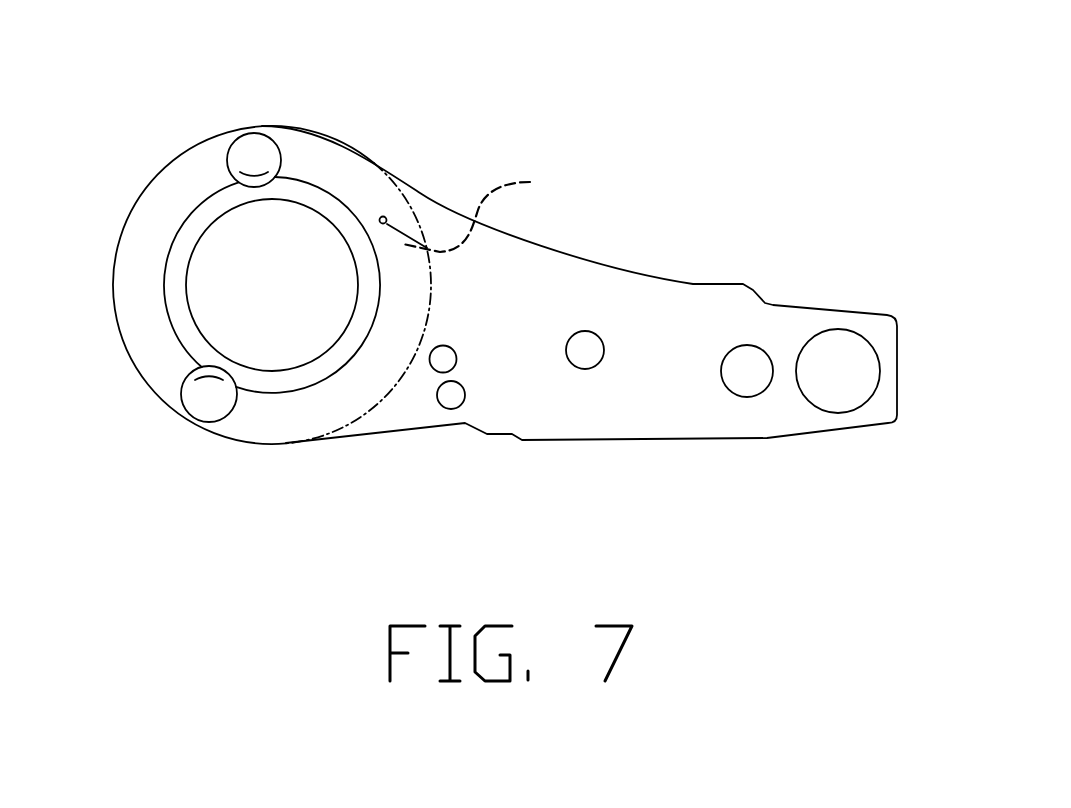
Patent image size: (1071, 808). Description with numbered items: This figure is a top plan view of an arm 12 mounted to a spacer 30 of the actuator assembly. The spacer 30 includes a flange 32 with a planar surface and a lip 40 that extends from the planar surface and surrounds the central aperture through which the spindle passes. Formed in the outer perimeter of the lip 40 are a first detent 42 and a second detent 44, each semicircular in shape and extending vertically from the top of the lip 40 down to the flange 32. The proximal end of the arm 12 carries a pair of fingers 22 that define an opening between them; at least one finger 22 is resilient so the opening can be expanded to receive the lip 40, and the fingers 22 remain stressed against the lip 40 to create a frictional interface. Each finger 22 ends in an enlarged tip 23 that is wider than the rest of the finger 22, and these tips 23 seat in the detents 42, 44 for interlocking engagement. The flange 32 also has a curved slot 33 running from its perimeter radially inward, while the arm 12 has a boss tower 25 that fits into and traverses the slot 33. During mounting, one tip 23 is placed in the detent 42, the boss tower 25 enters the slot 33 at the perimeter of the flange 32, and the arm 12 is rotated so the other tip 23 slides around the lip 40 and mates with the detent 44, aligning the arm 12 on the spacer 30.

The arm 12 is at (577, 267).
The fingers 22 is at (352, 172).
The tip 23 is at (242, 155).
The boss tower 25 is at (387, 217).
The spacer 30 is at (268, 298).
The flange 32 is at (168, 170).
The slot 33 is at (530, 182).
The lip 40 is at (185, 250).
The first detent 42 is at (213, 364).
The second detent 44 is at (253, 192).